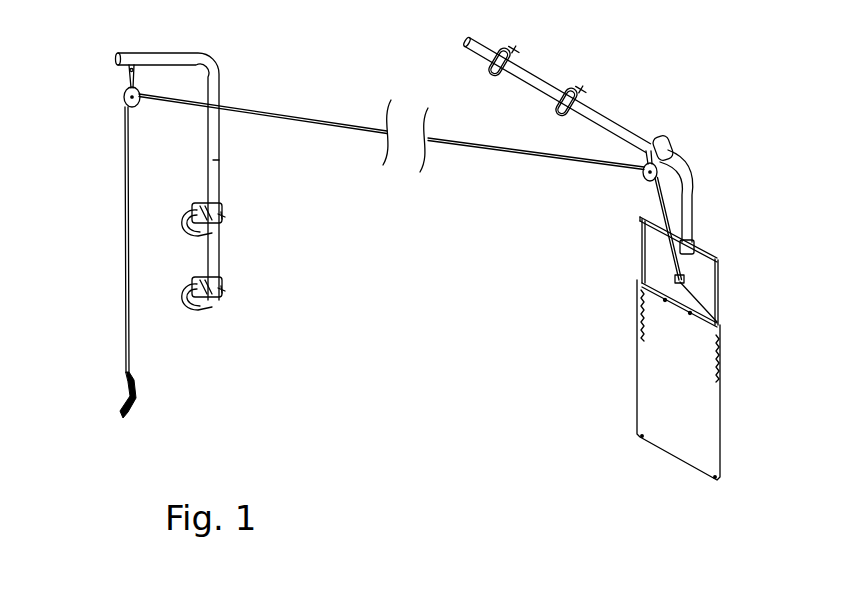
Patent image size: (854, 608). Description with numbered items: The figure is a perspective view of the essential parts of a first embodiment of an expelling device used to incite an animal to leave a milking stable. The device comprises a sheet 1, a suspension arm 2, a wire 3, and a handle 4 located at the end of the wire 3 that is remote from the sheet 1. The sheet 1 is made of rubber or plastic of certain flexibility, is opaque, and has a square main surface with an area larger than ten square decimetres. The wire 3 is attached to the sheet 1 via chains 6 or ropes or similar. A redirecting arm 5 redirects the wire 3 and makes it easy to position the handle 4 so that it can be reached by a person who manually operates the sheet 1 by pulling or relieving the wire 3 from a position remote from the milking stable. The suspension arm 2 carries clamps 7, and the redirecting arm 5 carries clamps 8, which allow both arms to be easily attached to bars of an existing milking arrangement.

The sheet 1 is at (657, 365).
The suspension arm 2 is at (600, 122).
The wire 3 is at (292, 113).
The handle 4 is at (120, 398).
The redirecting arm 5 is at (219, 167).
The chains 6 is at (636, 262).
The clamps 7 is at (505, 72).
The clamps 8 is at (200, 297).